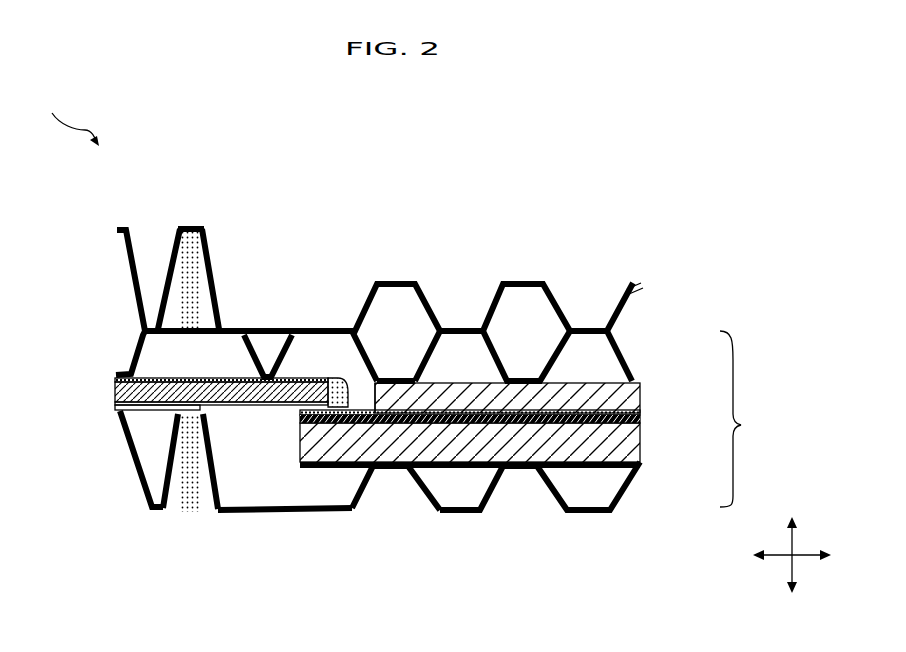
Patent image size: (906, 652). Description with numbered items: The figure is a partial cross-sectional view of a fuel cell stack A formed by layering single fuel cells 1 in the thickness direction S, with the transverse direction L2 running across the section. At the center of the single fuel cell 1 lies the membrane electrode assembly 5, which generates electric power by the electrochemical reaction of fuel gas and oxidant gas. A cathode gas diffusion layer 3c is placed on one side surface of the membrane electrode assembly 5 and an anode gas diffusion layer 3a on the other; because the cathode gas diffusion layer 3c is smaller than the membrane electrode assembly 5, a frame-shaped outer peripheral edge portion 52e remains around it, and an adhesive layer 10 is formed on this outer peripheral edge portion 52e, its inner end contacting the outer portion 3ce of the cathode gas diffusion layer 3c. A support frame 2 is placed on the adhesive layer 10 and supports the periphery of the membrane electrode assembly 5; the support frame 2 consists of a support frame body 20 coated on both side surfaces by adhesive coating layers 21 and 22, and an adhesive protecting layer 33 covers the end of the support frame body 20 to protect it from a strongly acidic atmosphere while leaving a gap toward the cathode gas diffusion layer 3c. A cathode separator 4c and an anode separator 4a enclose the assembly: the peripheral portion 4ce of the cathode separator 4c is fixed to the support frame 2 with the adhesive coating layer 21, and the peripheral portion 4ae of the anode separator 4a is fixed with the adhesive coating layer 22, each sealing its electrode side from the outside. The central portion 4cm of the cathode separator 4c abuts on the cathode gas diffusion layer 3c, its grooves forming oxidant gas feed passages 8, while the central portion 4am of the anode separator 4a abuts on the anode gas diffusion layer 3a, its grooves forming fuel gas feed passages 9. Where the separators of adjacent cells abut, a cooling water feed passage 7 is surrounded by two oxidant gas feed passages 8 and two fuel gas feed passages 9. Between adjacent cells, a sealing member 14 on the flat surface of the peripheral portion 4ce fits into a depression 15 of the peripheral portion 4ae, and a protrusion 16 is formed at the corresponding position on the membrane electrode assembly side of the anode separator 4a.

The fuel cell stack A is at (70, 118).
The single fuel cell 1 is at (741, 419).
The support frame 2 is at (215, 203).
The anode gas diffusion layer 3a is at (631, 284).
The cathode gas diffusion layer 3c is at (600, 440).
The outer portion of the cathode gas diffusion layer 3ce is at (383, 380).
The anode separator 4a is at (453, 516).
The peripheral portion of the anode separator 4ae is at (117, 432).
The central portion of the anode separator 4am is at (391, 495).
The cathode separator 4c is at (455, 325).
The peripheral portion of the cathode separator 4ce is at (119, 352).
The central portion of the cathode separator 4cm is at (512, 370).
The membrane electrode assembly 5 is at (648, 418).
The cooling water feed passage 7 is at (410, 346).
The oxidant gas feed passage 8 is at (592, 375).
The fuel gas feed passage 9 is at (592, 502).
The adhesive layer 10 is at (298, 414).
The sealing member 14 is at (178, 236).
The depression 15 is at (167, 505).
The protrusion 16 is at (210, 452).
The support frame body 20 is at (293, 388).
The adhesive coating layer 21 is at (263, 377).
The adhesive coating layer 22 is at (312, 400).
The adhesive protecting layer 33 is at (325, 377).
The outer peripheral edge portion 52e is at (352, 400).
The transverse direction L2 is at (779, 567).
The thickness direction S is at (785, 568).